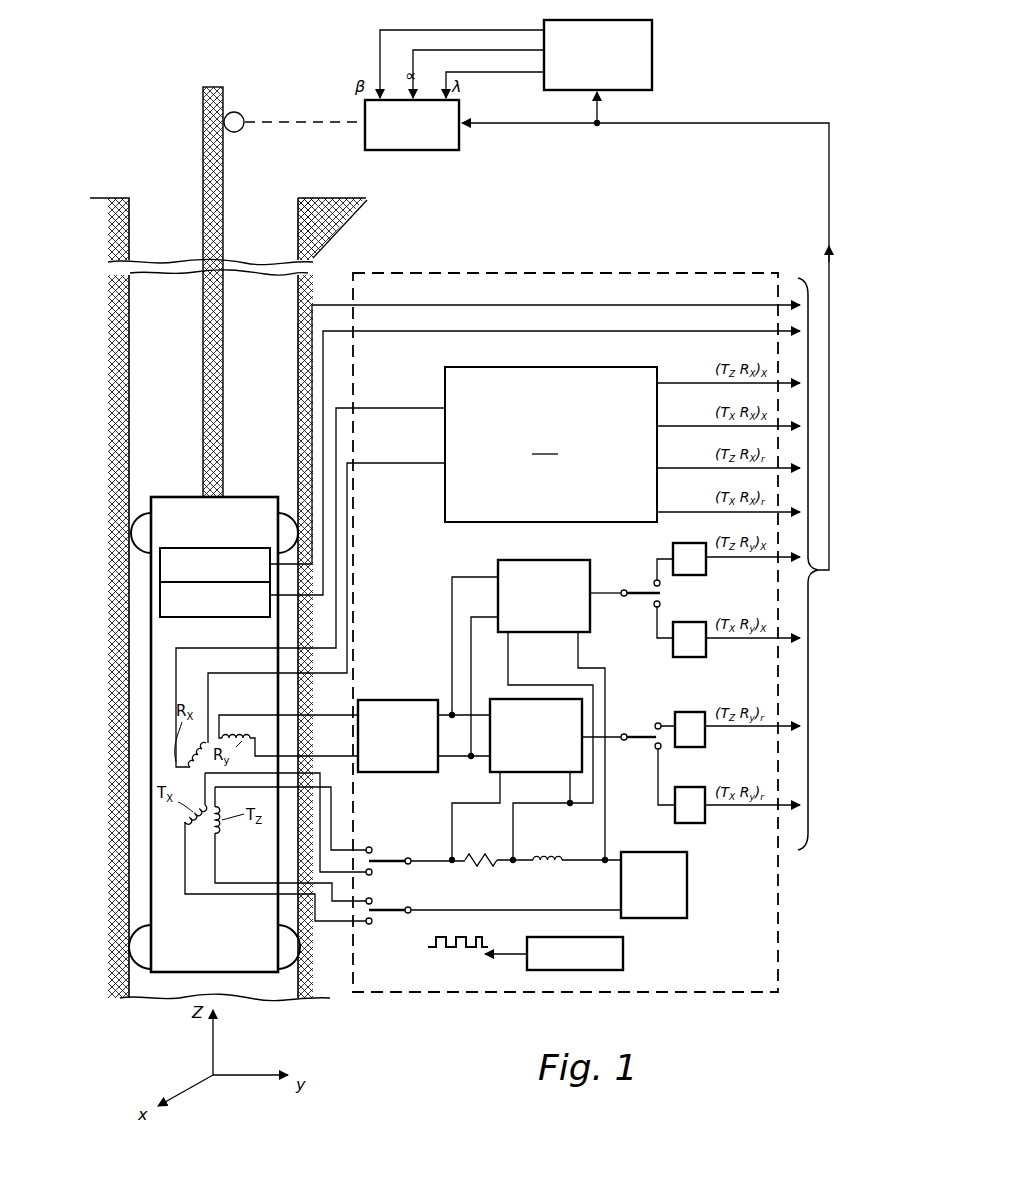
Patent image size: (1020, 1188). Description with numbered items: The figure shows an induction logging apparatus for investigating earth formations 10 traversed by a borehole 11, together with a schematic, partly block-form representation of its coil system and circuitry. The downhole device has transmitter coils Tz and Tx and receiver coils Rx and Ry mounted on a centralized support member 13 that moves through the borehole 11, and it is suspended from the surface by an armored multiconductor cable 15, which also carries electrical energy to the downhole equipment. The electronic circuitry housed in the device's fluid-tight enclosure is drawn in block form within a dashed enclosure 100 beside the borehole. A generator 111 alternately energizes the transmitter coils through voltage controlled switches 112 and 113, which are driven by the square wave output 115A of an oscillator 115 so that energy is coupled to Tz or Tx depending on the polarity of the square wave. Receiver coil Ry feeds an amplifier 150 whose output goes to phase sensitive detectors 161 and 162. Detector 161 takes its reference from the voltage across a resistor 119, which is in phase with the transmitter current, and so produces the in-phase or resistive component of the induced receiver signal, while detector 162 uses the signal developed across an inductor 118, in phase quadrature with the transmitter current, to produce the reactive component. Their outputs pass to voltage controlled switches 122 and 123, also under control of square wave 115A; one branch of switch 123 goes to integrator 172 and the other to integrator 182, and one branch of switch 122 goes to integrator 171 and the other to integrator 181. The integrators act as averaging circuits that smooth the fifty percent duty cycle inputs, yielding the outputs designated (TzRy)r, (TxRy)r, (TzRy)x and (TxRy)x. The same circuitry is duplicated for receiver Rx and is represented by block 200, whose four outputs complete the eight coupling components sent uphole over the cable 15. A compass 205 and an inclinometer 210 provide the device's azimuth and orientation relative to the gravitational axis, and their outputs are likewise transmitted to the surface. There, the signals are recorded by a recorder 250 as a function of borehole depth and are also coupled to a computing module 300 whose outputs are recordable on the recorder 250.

The earth formations 10 is at (114, 223).
The borehole 11 is at (155, 195).
The centralized support member 13 is at (240, 497).
The armored multiconductor cable 15 is at (203, 135).
The dashed enclosure 100 is at (452, 990).
The generator 111 is at (687, 900).
The voltage controlled switch 112 is at (374, 866).
The voltage controlled switch 113 is at (363, 907).
The oscillator 115 is at (623, 956).
The square wave output 115A is at (639, 582).
The inductor 118 is at (552, 855).
The resistor 119 is at (484, 853).
The voltage controlled switch 122 is at (655, 726).
The voltage controlled switch 123 is at (652, 602).
The amplifier 150 is at (398, 700).
The phase sensitive detector 161 is at (500, 770).
The phase sensitive detector 162 is at (590, 560).
The integrator 171 is at (675, 712).
The integrator 172 is at (683, 545).
The integrator 181 is at (675, 816).
The integrator 182 is at (673, 652).
The block 200 is at (622, 444).
The compass 205 is at (200, 548).
The inclinometer 210 is at (176, 586).
The recorder 250 is at (417, 150).
The computing module 300 is at (652, 57).